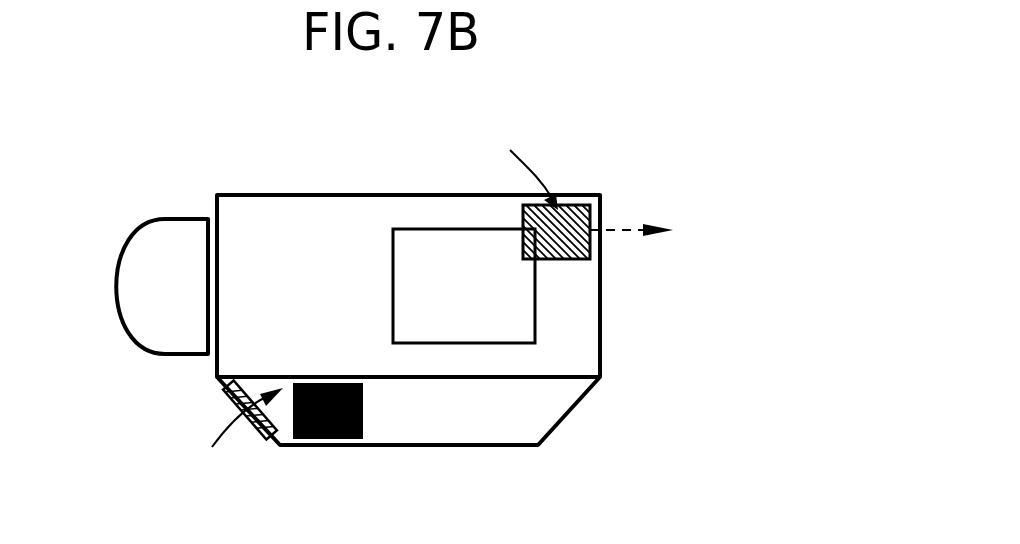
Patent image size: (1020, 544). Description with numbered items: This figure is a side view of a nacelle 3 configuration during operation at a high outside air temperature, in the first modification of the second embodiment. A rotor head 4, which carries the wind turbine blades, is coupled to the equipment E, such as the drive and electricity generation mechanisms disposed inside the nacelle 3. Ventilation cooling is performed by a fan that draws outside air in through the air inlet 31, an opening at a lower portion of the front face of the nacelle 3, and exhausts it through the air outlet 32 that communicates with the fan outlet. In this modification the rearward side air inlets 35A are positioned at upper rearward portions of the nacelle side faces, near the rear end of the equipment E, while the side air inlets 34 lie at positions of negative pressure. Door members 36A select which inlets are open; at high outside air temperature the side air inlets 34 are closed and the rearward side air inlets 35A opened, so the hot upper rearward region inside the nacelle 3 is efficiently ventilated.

The nacelle 3 is at (601, 326).
The rotor head 4 is at (116, 286).
The air inlet 31 is at (230, 398).
The air outlet 32 is at (650, 179).
The side air inlets 34 is at (316, 372).
The door members 36A is at (327, 383).
The rearward side air inlets 35A is at (580, 206).
The equipment E is at (393, 266).